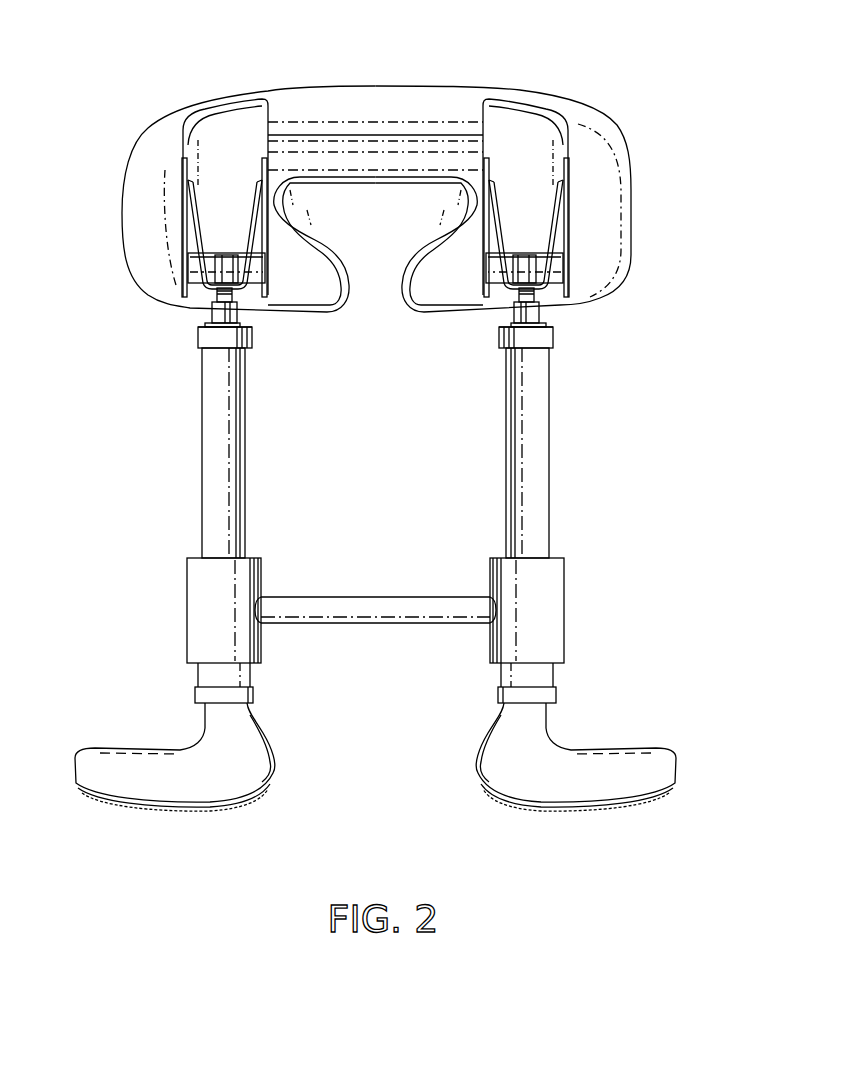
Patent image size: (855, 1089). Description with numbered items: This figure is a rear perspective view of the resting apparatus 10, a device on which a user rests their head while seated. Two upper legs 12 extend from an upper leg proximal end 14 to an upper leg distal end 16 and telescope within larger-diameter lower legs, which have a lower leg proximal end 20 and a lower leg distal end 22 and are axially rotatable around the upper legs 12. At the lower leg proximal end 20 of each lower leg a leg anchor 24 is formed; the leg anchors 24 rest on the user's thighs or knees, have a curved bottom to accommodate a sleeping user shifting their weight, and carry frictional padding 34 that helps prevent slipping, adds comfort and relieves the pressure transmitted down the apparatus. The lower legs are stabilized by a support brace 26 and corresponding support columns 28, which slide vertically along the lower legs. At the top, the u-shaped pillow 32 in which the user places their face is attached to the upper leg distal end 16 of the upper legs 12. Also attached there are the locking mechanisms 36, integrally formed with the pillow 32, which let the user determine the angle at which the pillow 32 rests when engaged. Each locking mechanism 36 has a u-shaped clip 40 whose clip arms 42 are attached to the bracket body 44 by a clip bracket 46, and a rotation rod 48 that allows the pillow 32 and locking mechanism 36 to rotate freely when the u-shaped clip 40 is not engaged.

The resting apparatus 10 is at (401, 441).
The upper legs 12 is at (245, 340).
The upper leg proximal end 14 is at (248, 447).
The upper leg distal end 16 is at (237, 315).
The lower leg proximal end 20 is at (195, 697).
The lower leg distal end 22 is at (205, 338).
The leg anchors 24 is at (95, 749).
The support brace 26 is at (405, 597).
The support columns 28 is at (565, 600).
The pillow 32 is at (632, 190).
The frictional padding 34 is at (250, 795).
The locking mechanisms 36 is at (185, 110).
The u-shaped clip 40 is at (198, 223).
The clip arms 42 is at (258, 181).
The bracket body 44 is at (182, 165).
The clip bracket 46 is at (216, 294).
The rotation rod 48 is at (267, 268).